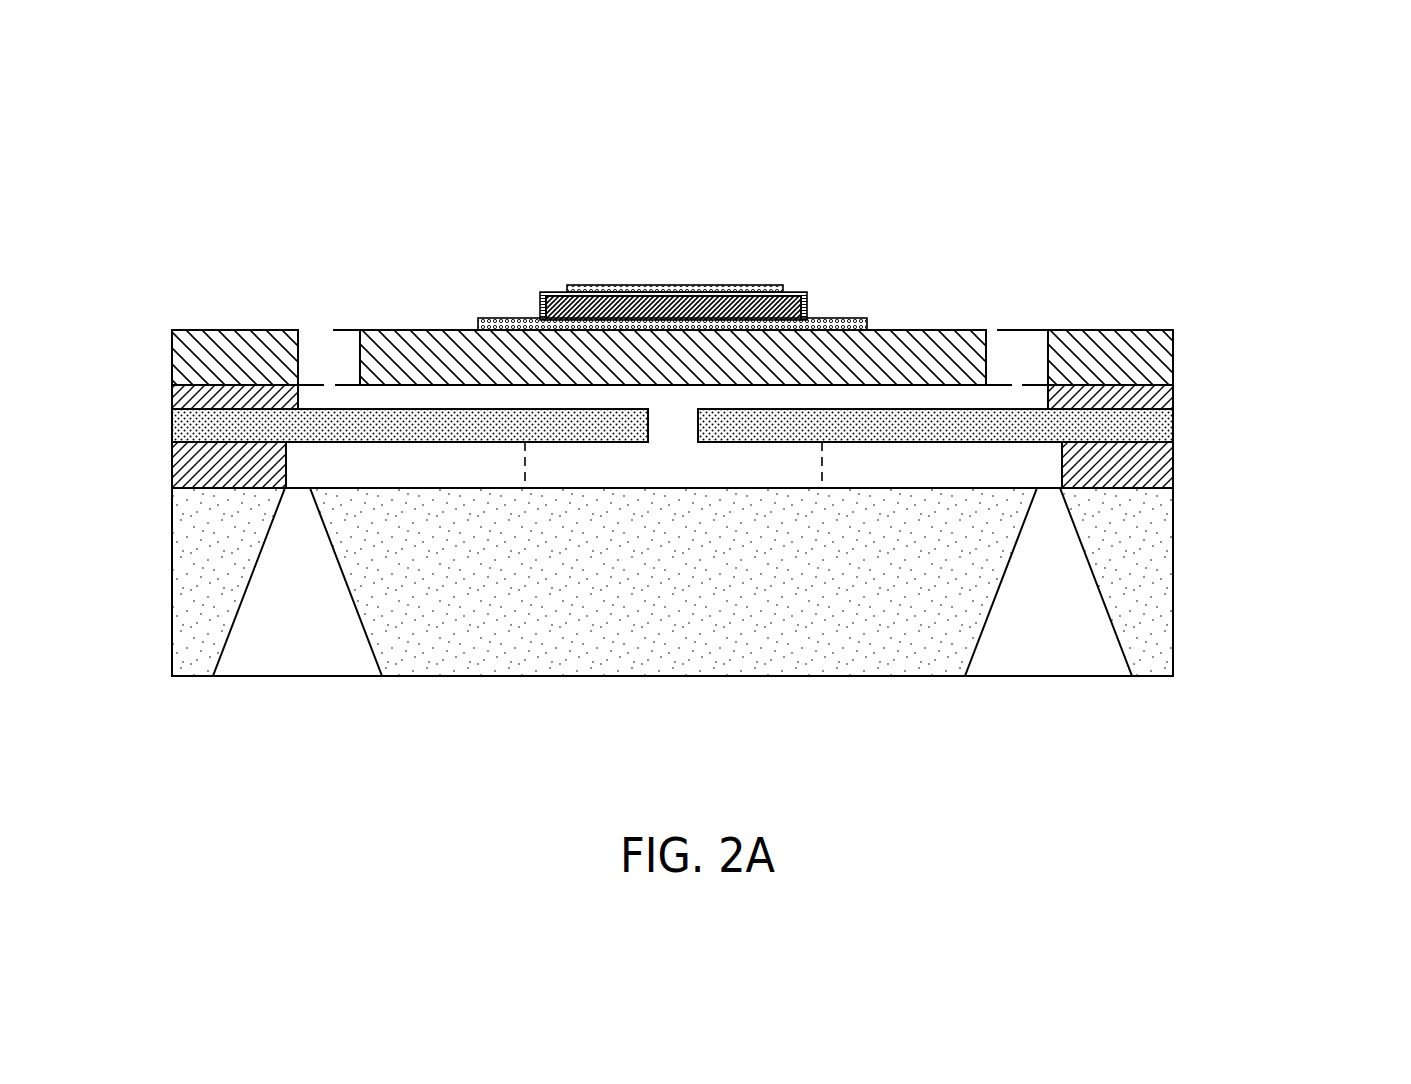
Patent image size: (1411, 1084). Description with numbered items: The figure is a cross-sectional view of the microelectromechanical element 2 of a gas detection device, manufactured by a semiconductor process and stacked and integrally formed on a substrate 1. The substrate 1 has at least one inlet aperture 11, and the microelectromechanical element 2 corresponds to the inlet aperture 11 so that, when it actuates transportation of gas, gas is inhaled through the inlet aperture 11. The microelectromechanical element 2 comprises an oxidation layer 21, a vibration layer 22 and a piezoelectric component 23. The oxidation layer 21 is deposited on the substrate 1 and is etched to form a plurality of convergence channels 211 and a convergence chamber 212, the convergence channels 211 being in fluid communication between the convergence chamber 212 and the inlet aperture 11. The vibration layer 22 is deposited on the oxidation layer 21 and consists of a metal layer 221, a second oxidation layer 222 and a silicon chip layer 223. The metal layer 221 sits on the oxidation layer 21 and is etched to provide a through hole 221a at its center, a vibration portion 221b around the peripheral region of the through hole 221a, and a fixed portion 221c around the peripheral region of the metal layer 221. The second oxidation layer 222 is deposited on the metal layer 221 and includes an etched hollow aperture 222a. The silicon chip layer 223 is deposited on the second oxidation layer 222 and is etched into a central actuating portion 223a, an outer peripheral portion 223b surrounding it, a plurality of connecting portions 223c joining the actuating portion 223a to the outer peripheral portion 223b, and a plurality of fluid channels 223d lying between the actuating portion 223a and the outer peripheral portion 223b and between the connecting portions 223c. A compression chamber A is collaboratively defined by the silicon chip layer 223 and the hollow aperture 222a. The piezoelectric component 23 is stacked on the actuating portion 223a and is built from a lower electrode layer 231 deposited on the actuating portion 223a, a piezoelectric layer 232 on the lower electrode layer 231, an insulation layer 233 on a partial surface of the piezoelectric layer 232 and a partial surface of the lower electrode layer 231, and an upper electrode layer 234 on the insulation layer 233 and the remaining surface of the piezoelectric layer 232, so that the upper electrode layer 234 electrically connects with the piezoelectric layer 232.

The substrate 1 is at (734, 641).
The inlet aperture 11 is at (290, 620).
The microelectromechanical element 2 is at (719, 459).
The oxidation layer 21 is at (610, 618).
The convergence channel 211 is at (355, 462).
The convergence chamber 212 is at (577, 462).
The vibration layer 22 is at (719, 468).
The metal layer 221 is at (742, 593).
The through hole 221a is at (673, 425).
The vibration portion 221b is at (795, 427).
The fixed portion 221c is at (1122, 428).
The second oxidation layer 222 is at (682, 392).
The hollow aperture 222a is at (280, 390).
The silicon chip layer 223 is at (741, 272).
The actuating portion 223a is at (910, 330).
The outer peripheral portion 223b is at (232, 368).
The connecting portion 223c is at (333, 330).
The fluid channel 223d is at (328, 352).
The piezoelectric component 23 is at (696, 227).
The lower electrode layer 231 is at (833, 320).
The piezoelectric layer 232 is at (805, 315).
The insulation layer 233 is at (787, 290).
The upper electrode layer 234 is at (675, 249).
The compression chamber A is at (489, 398).